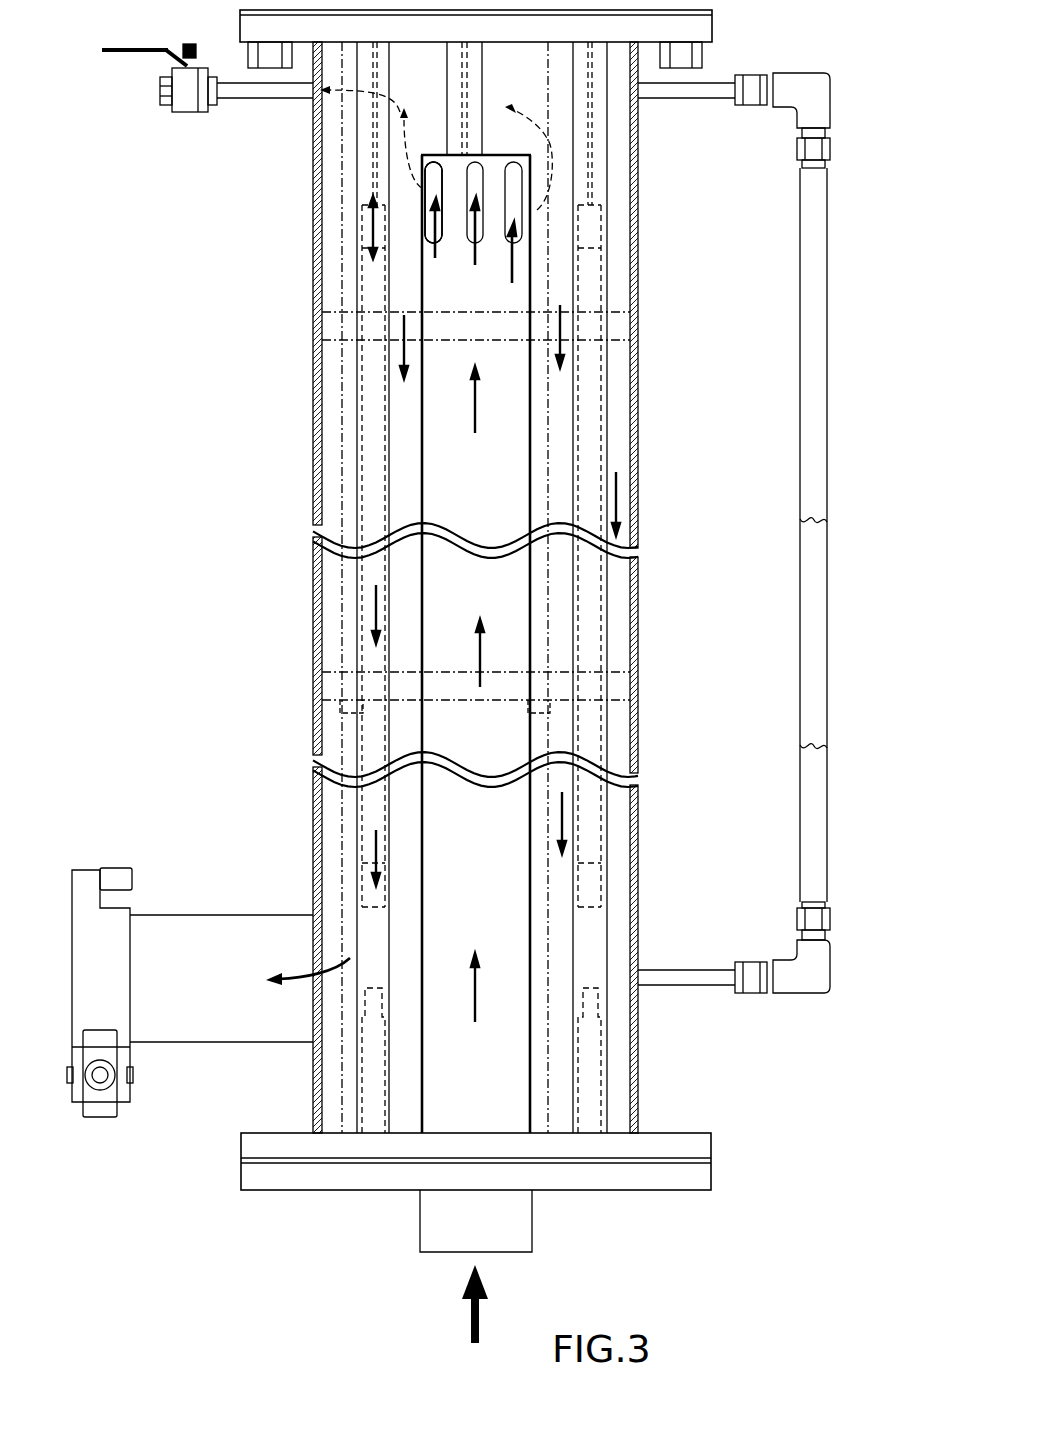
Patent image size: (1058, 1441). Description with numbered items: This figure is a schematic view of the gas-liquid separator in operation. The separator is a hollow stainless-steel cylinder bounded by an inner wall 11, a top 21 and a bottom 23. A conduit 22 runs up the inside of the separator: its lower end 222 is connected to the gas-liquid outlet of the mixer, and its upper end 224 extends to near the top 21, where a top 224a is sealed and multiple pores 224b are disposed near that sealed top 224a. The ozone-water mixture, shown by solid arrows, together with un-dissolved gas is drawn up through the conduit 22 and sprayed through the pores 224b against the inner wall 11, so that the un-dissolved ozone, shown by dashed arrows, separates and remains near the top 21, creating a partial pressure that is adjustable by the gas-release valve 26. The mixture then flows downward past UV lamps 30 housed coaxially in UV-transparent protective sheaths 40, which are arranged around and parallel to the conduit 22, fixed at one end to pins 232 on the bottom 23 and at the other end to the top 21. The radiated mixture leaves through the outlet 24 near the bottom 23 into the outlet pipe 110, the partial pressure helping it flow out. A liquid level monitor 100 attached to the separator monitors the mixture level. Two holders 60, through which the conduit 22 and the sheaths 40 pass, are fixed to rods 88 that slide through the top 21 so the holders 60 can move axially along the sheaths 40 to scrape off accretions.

The top 21 is at (700, 27).
The gas-release valve 26 is at (185, 100).
The upper end 224 is at (222, 153).
The top 224a is at (428, 155).
The pores 224b is at (428, 215).
The inner wall 11 is at (320, 257).
The protective sheaths 40 is at (600, 167).
The UV lamps 30 is at (595, 287).
The holders 60 is at (333, 324).
The rods 88 is at (345, 440).
The conduit 22 is at (500, 460).
The liquid level monitor 100 is at (820, 593).
The outlet pipe 110 is at (152, 925).
The outlet 24 is at (315, 952).
The pins 232 is at (600, 1060).
The lower end 222 is at (473, 1133).
The bottom 23 is at (712, 1140).